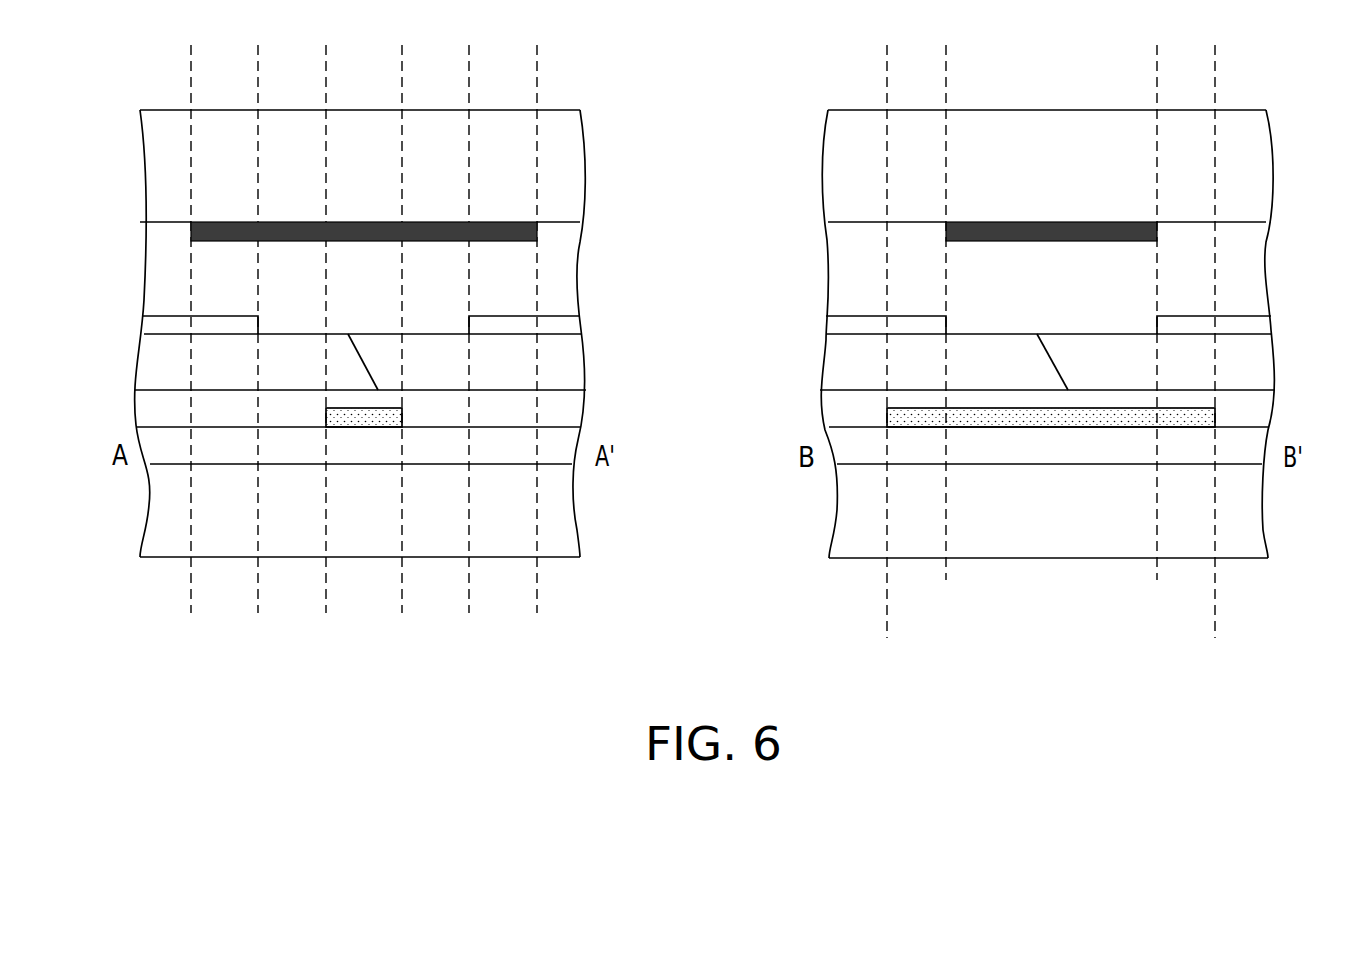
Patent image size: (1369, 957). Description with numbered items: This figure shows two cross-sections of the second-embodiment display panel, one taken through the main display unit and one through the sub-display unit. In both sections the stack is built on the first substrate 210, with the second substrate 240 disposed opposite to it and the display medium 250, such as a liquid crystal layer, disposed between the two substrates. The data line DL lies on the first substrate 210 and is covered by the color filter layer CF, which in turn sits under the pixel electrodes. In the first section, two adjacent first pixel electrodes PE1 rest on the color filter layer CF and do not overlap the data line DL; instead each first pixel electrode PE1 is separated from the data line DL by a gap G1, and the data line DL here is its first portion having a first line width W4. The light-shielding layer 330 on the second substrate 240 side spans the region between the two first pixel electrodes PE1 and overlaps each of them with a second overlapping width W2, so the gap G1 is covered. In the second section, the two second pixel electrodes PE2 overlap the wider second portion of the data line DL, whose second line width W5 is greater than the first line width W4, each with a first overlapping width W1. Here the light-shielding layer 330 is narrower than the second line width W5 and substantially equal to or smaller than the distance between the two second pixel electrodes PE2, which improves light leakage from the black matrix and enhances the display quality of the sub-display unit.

The first substrate 210 is at (562, 503).
The second substrate 240 is at (578, 163).
The display medium 250 is at (560, 278).
The light-shielding layer 330 is at (437, 222).
The first pixel electrode PE1 is at (150, 325).
The second pixel electrode PE2 is at (838, 325).
The color filter layer CF is at (150, 370).
The data line DL is at (402, 418).
The first overlapping width W1 is at (946, 91).
The second overlapping width W2 is at (258, 78).
The first line width W4 is at (402, 78).
The second line width W5 is at (1215, 604).
The gap G1 is at (326, 78).